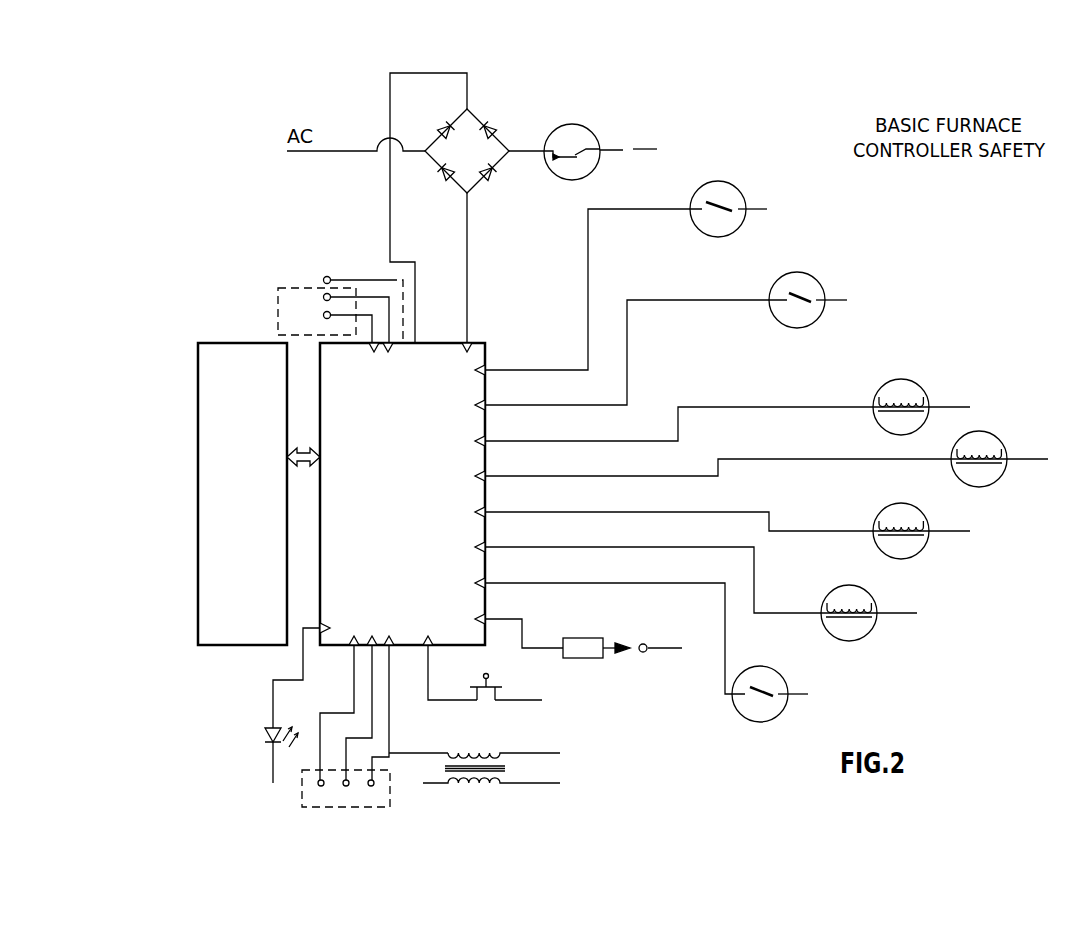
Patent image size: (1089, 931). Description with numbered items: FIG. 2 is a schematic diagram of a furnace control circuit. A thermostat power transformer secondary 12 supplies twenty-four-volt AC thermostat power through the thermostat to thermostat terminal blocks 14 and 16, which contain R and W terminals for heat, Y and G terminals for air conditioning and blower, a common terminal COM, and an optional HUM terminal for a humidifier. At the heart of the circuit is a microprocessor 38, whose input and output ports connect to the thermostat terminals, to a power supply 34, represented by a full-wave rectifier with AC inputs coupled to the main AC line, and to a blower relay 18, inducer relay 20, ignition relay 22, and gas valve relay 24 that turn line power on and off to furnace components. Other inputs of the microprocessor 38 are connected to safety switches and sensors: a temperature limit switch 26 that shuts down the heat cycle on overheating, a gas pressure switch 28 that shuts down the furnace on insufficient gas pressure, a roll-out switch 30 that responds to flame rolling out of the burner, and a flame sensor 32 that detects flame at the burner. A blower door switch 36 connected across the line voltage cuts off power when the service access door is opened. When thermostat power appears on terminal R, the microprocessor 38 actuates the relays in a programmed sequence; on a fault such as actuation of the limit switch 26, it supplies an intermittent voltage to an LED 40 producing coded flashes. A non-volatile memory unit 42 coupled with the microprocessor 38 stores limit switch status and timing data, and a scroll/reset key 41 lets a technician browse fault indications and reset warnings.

The thermostat power transformer secondary 12 is at (440, 765).
The thermostat terminal block 14 is at (287, 323).
The thermostat terminal block 16 is at (310, 788).
The blower relay 18 is at (865, 598).
The inducer relay 20 is at (908, 513).
The ignition relay 22 is at (983, 442).
The gas valve relay 24 is at (908, 390).
The temperature limit switch 26 is at (690, 210).
The gas pressure switch 28 is at (800, 282).
The roll-out switch 30 is at (778, 682).
The flame sensor 32 is at (583, 648).
The power supply 34 is at (477, 117).
The blower door switch 36 is at (591, 162).
The microprocessor 38 is at (433, 485).
The LED 40 is at (272, 732).
The scroll/reset key 41 is at (490, 700).
The non-volatile memory unit 42 is at (232, 518).